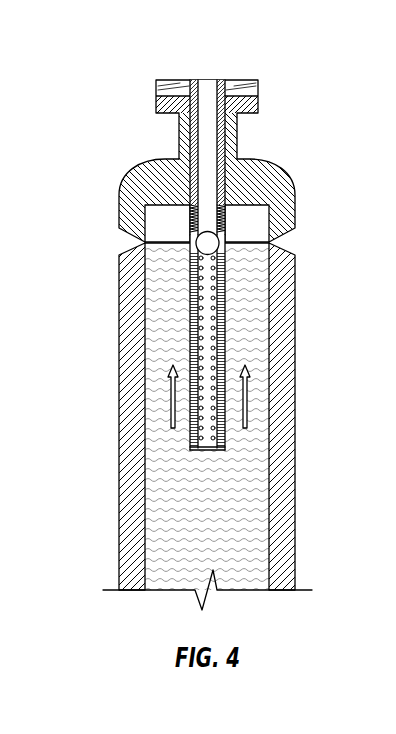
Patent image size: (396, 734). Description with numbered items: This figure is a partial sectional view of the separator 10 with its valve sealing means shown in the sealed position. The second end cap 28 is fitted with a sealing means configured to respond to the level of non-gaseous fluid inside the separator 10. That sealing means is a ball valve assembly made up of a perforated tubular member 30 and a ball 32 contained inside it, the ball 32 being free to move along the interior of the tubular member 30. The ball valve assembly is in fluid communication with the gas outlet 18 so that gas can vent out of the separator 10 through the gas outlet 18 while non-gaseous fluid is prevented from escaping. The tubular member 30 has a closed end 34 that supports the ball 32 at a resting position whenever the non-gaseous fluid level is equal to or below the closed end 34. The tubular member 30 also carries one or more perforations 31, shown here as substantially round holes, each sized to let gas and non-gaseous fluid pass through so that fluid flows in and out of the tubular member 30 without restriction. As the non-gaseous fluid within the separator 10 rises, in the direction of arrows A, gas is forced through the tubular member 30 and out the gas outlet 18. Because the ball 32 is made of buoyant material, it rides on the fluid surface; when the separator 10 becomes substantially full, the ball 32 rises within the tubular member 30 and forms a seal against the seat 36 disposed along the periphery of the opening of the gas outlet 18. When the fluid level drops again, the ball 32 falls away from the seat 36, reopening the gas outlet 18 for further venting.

The separator 10 is at (103, 27).
The gas outlet 18 is at (208, 79).
The second end cap 28 is at (120, 213).
The perforated tubular member 30 is at (188, 437).
The perforations 31 is at (190, 348).
The ball 32 is at (209, 247).
The closed end 34 is at (213, 450).
The seat 36 is at (225, 235).
The arrows indicating rising non-gaseous fluid A is at (167, 393).